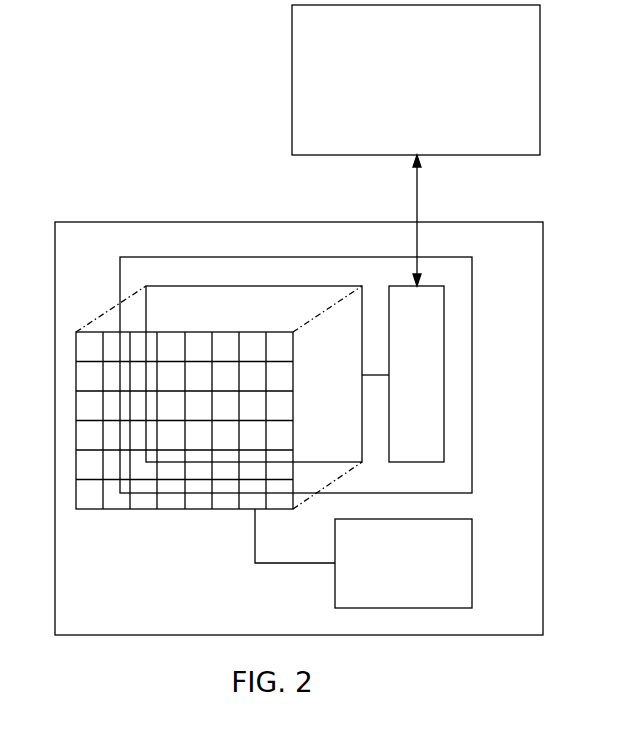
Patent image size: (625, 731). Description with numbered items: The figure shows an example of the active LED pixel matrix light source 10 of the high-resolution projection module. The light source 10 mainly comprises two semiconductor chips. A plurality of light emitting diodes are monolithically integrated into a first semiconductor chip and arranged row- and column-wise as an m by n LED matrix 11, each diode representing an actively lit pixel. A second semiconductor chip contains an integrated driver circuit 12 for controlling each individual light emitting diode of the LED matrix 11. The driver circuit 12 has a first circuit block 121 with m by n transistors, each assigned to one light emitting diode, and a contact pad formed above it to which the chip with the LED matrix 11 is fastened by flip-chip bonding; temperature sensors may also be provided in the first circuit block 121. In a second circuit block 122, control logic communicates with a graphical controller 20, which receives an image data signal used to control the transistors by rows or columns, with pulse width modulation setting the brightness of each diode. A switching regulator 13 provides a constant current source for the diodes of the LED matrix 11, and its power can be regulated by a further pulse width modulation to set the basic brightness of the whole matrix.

The active LED pixel matrix light source 10 is at (300, 222).
The LED matrix 11 is at (118, 512).
The integrated driver circuit 12 is at (473, 373).
The first circuit block 121 is at (219, 397).
The second circuit block 122 is at (403, 308).
The switching regulator 13 is at (363, 558).
The graphical controller 20 is at (416, 80).